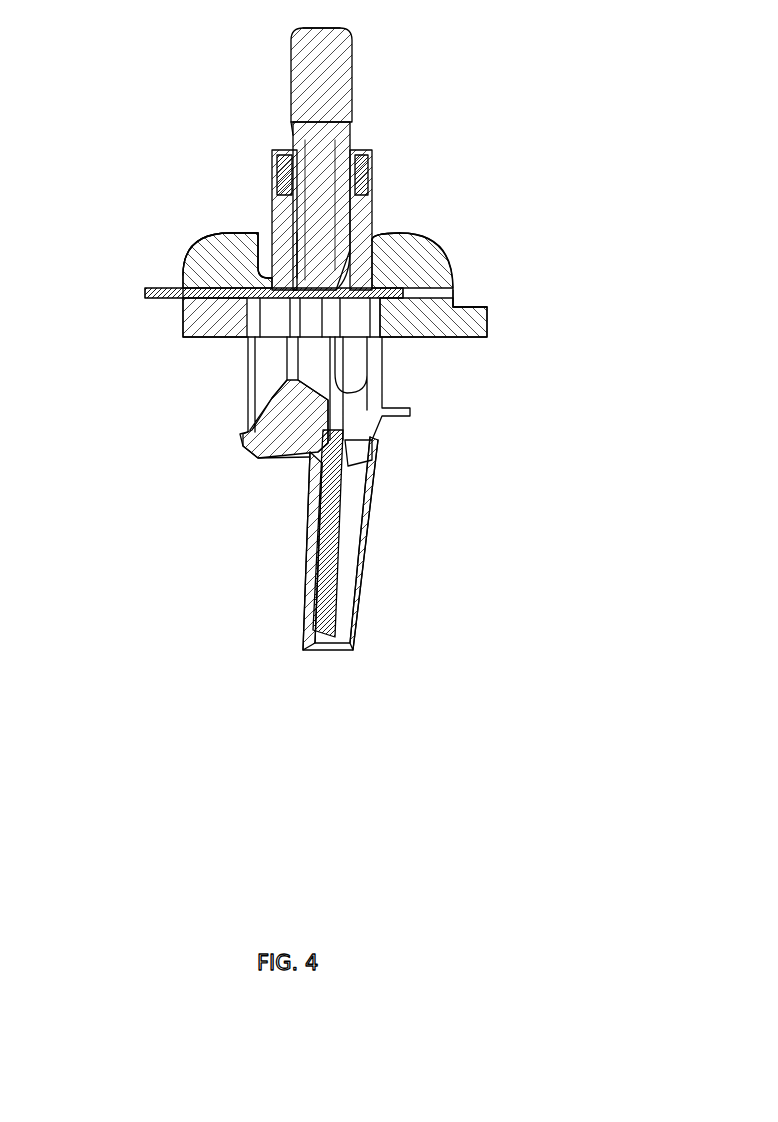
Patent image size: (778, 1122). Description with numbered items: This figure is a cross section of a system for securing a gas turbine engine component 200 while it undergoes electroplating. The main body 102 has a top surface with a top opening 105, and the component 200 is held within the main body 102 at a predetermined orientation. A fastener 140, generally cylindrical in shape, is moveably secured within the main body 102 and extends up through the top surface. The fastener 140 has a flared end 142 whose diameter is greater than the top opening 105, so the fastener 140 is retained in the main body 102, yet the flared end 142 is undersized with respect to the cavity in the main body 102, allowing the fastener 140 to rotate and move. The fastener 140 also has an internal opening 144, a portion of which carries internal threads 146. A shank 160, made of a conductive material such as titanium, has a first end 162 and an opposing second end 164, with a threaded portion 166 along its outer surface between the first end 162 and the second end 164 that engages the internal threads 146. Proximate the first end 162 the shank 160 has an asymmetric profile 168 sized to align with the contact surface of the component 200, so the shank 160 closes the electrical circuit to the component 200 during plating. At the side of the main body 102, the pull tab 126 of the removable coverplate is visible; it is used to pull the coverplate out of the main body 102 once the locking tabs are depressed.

The main body 102 is at (447, 276).
The top opening 105 is at (270, 235).
The pull tab 126 is at (147, 291).
The fastener 140 is at (362, 152).
The flared end 142 is at (380, 257).
The internal opening 144 is at (290, 222).
The internal threads 146 is at (350, 188).
The shank 160 is at (344, 38).
The first end 162 is at (334, 292).
The second end 164 is at (305, 30).
The threaded portion 166 is at (292, 131).
The asymmetric profile 168 is at (340, 266).
The gas turbine engine component 200 is at (345, 516).